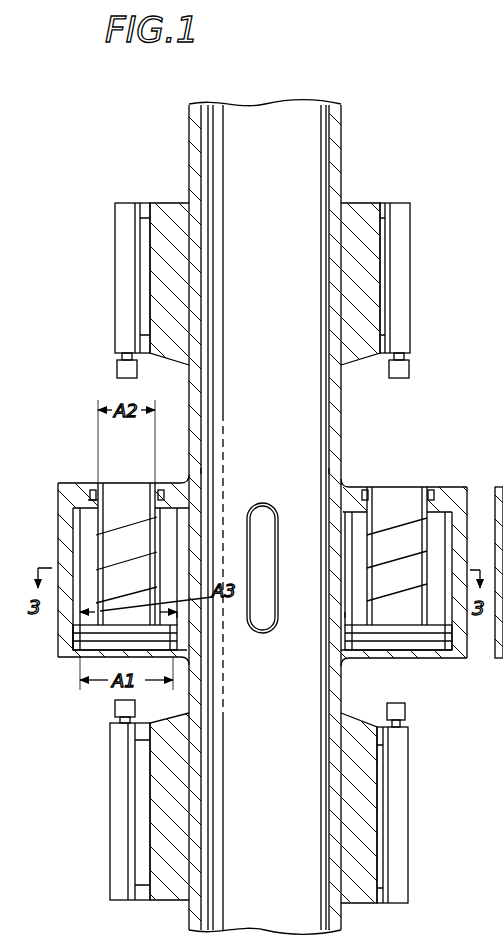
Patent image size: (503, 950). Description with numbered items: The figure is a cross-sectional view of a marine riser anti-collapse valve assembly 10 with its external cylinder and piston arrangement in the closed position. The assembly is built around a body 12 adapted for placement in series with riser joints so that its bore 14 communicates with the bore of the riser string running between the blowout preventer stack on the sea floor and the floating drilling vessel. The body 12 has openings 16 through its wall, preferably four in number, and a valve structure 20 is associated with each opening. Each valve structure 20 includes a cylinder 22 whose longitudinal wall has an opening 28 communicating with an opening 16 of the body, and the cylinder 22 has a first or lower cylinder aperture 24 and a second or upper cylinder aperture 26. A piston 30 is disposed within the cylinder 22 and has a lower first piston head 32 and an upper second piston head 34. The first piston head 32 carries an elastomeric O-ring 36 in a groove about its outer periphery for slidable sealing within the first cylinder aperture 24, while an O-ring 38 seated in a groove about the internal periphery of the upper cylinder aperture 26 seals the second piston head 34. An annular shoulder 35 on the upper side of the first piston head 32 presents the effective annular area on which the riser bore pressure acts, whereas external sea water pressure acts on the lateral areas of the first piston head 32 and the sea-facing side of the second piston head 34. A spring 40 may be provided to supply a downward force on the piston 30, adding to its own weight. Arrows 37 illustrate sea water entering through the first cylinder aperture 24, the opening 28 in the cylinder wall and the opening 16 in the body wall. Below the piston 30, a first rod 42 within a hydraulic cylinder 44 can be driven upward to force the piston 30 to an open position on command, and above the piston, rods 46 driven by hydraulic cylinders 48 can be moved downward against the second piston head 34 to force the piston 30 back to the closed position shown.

The anti-collapse valve assembly 10 is at (422, 415).
The body 12 is at (340, 405).
The bore 14 is at (305, 100).
The openings 16 is at (172, 526).
The valve structure 20 is at (46, 504).
The cylinder 22 is at (65, 529).
The first cylinder aperture 24 is at (102, 668).
The second cylinder aperture 26 is at (96, 484).
The opening 28 is at (202, 470).
The piston 30 is at (86, 640).
The first piston head 32 is at (182, 665).
The second piston head 34 is at (117, 491).
The annular shoulder 35 is at (177, 615).
The O-ring 36 is at (82, 668).
The arrows 37 is at (502, 688).
The O-ring 38 is at (92, 494).
The spring 40 is at (130, 565).
The first rod 42 is at (120, 714).
The hydraulic cylinder 44 is at (117, 868).
The rods 46 is at (117, 368).
The hydraulic cylinders 48 is at (125, 247).